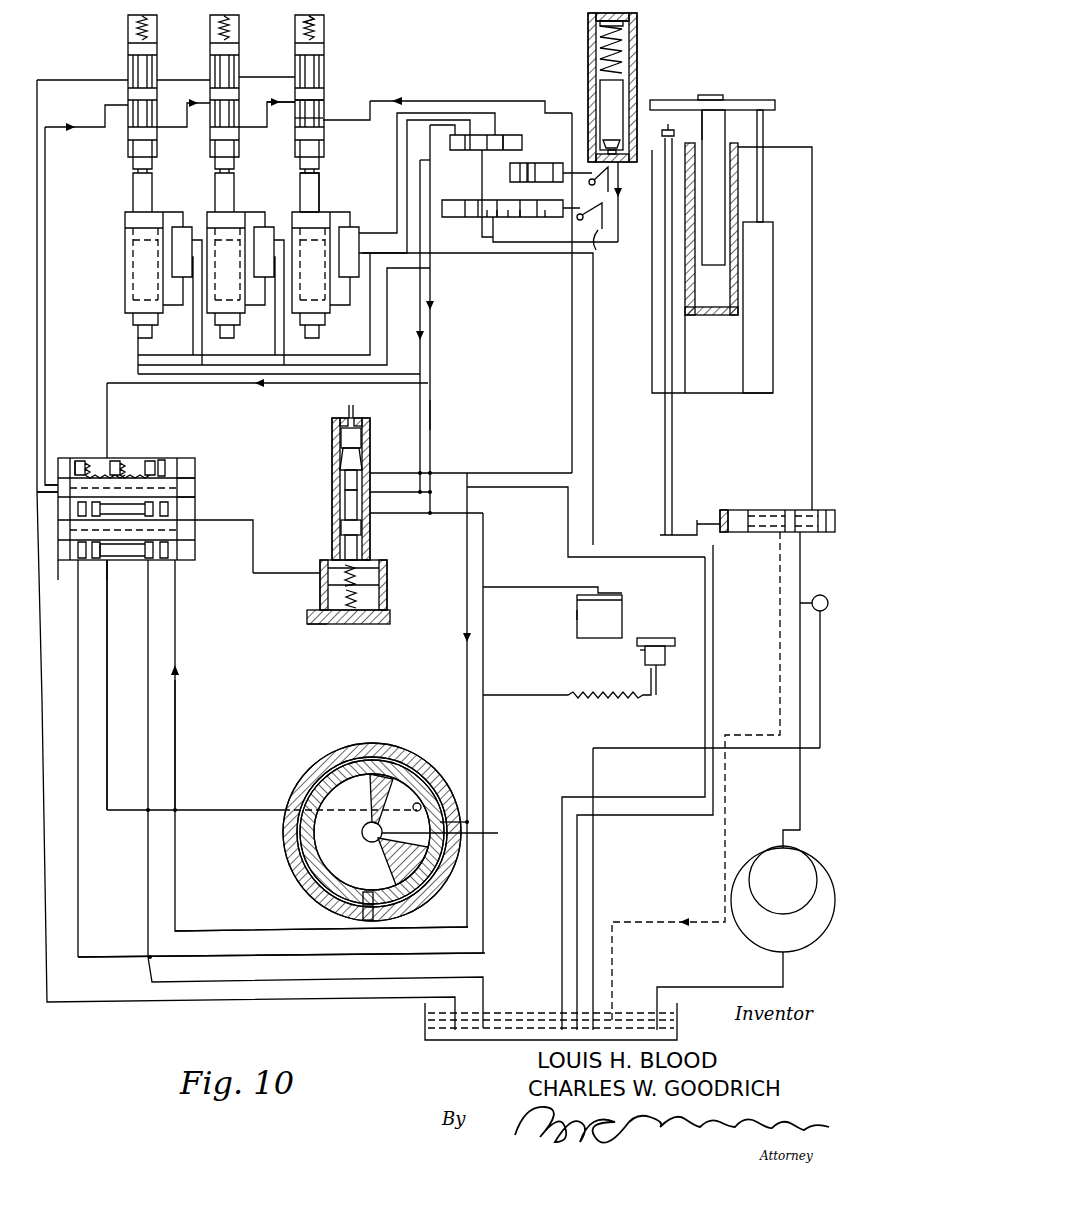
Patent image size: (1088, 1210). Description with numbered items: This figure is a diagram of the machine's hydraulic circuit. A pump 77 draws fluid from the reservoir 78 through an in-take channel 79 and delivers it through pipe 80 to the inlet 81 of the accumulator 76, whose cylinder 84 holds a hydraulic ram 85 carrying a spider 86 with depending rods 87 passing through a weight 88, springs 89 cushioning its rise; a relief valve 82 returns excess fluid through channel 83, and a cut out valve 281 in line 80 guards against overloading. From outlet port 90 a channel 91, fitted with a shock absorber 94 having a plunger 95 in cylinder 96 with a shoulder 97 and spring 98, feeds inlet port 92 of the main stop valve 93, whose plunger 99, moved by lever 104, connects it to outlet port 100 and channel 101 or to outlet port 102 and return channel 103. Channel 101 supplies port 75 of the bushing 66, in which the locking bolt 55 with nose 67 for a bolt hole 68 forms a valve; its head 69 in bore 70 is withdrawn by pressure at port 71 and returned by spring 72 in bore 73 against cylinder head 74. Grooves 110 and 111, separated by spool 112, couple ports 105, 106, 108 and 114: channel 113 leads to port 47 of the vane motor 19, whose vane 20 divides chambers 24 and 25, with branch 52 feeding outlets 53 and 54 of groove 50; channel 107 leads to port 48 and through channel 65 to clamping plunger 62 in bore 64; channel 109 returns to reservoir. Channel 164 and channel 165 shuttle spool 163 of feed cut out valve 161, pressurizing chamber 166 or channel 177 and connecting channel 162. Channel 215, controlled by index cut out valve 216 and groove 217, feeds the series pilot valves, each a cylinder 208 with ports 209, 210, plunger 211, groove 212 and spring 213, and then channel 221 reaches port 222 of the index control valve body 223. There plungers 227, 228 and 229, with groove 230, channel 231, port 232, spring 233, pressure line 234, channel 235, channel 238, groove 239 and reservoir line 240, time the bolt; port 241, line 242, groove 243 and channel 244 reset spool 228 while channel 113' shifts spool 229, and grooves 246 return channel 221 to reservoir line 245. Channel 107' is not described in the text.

The hydraulic motor 19 is at (283, 832).
The radial vane 20 is at (340, 780).
The chamber 24 is at (451, 834).
The chamber 25 is at (325, 860).
The port 47 is at (363, 908).
The port 48 is at (445, 784).
The pressure groove 50 is at (653, 638).
The channel 52 is at (666, 669).
The outlet 53 is at (678, 654).
The outlet 54 is at (640, 650).
The locking bolt 55 is at (342, 469).
The clamping plunger 62 is at (622, 608).
The bore 64 is at (577, 614).
The vertical channel 65 is at (542, 590).
The bushing 66 is at (332, 500).
The tapered nose 67 is at (364, 449).
The bolt hole 68 is at (356, 425).
The enlarged head 69 is at (328, 600).
The enlarged bore 70 is at (379, 590).
The port 71 is at (320, 574).
The spring 72 is at (353, 625).
The internal bore 73 is at (373, 624).
The cylinder head 74 is at (326, 624).
The port 75 is at (370, 533).
The accumulator 76 is at (773, 301).
The pump 77 is at (738, 917).
The reservoir 78 is at (680, 1016).
The in-take channel 79 is at (692, 987).
The pipe 80 is at (800, 718).
The inlet 81 is at (728, 140).
The relief valve 82 is at (824, 595).
The channel 83 is at (653, 748).
The cylinder 84 is at (738, 192).
The hydraulic ram 85 is at (718, 134).
The spider 86 is at (735, 100).
The depending rod 87 is at (748, 147).
The weight 88 is at (773, 264).
The spring 89 is at (763, 208).
The outlet port 90 is at (685, 134).
The channel 91 is at (618, 212).
The inlet port 92 is at (490, 220).
The main stop valve 93 is at (525, 220).
The shock absorber 94 is at (630, 102).
The plunger 95 is at (598, 96).
The cylinder 96 is at (628, 42).
The shoulder 97 is at (630, 68).
The spring 98 is at (592, 28).
The valve plunger 99 is at (513, 220).
The outlet port 100 is at (476, 205).
The channel 101 is at (420, 314).
The outlet port 102 is at (503, 220).
The return channel 103 is at (550, 220).
The lever 104 is at (598, 242).
The port 105 is at (383, 562).
The port 106 is at (370, 513).
The channel 107 is at (302, 735).
The pipe 107' is at (281, 904).
The port 108 is at (370, 496).
The channel 109 is at (555, 494).
The annular groove 110 is at (345, 545).
The annular groove 111 is at (342, 488).
The spool portion 112 is at (341, 526).
The channel 113 is at (413, 702).
The channel 113' is at (319, 796).
The port 114 is at (370, 470).
The feed cut out valve 161 is at (508, 133).
The channel 162 is at (397, 140).
The spool 163 is at (460, 150).
The channel 164 is at (432, 404).
The channel 165 is at (572, 380).
The chamber 166 is at (450, 150).
The channel 177 is at (484, 133).
The cylinder 208 is at (325, 62).
The inlet port 209 is at (328, 120).
The outlet port 210 is at (294, 98).
The valve plunger 211 is at (316, 196).
The annular groove 212 is at (333, 98).
The spring 213 is at (322, 22).
The channel 215 is at (429, 101).
The index cut out valve 216 is at (540, 182).
The annular groove 217 is at (538, 160).
The channel 221 is at (37, 325).
The port 222 is at (46, 495).
The index control valve body 223 is at (166, 458).
The valve plunger 227 is at (152, 440).
The valve plunger 228 is at (165, 555).
The valve plunger 229 is at (125, 555).
The annular groove 230 is at (105, 554).
The channel 231 is at (240, 545).
The port 232 is at (195, 480).
The spring 233 is at (100, 460).
The pressure line 234 is at (107, 383).
The interconnecting channel 235 is at (195, 497).
The channel 238 is at (180, 548).
The annular groove 239 is at (154, 555).
The reservoir line 240 is at (138, 562).
The port 241 is at (417, 802).
The line 242 is at (216, 810).
The annular groove 243 is at (115, 560).
The channel 244 is at (58, 560).
The reservoir line 245 is at (39, 80).
The annular groove 246 is at (155, 67).
The cut out valve 281 is at (740, 510).